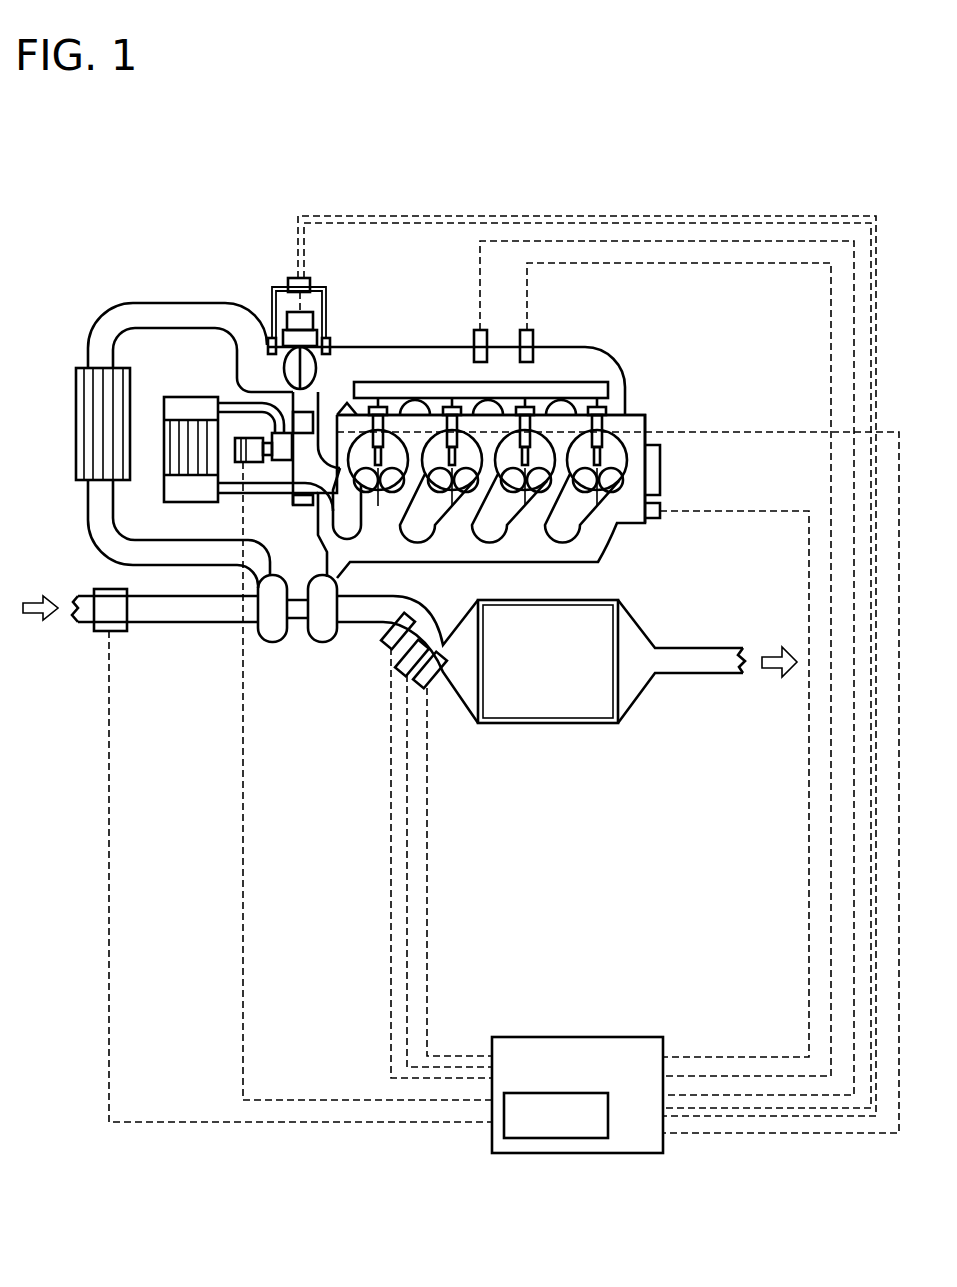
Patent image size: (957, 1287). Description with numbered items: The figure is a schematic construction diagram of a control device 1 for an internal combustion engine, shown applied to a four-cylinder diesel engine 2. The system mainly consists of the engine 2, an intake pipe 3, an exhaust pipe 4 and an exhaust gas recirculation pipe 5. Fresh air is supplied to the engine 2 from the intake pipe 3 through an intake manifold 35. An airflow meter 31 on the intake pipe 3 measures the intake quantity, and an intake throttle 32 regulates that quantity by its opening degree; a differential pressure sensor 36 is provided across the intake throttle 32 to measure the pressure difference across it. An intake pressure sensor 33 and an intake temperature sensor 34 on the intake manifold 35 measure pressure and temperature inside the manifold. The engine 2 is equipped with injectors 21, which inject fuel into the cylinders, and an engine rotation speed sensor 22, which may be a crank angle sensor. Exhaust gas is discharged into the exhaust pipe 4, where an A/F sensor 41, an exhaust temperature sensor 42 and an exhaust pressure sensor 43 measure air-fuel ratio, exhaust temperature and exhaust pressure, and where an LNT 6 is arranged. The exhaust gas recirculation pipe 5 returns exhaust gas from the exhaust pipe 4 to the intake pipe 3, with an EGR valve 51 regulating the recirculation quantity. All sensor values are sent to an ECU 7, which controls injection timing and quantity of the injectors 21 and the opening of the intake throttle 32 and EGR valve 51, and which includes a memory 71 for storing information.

The control device 1 is at (675, 169).
The engine 2 is at (650, 422).
The injector 21 is at (602, 440).
The engine rotation speed sensor 22 is at (663, 508).
The intake pipe 3 is at (193, 625).
The airflow meter 31 is at (100, 632).
The intake throttle 32 is at (320, 350).
The intake pressure sensor 33 is at (478, 328).
The intake temperature sensor 34 is at (535, 330).
The intake manifold 35 is at (600, 347).
The differential pressure sensor 36 is at (295, 278).
The exhaust pipe 4 is at (350, 628).
The A/F sensor 41 is at (387, 640).
The exhaust temperature sensor 42 is at (407, 678).
The exhaust pressure sensor 43 is at (430, 688).
The exhaust gas recirculation pipe 5 is at (252, 492).
The EGR valve 51 is at (243, 438).
The LNT 6 is at (590, 600).
The ECU 7 is at (582, 1037).
The memory 71 is at (608, 1118).